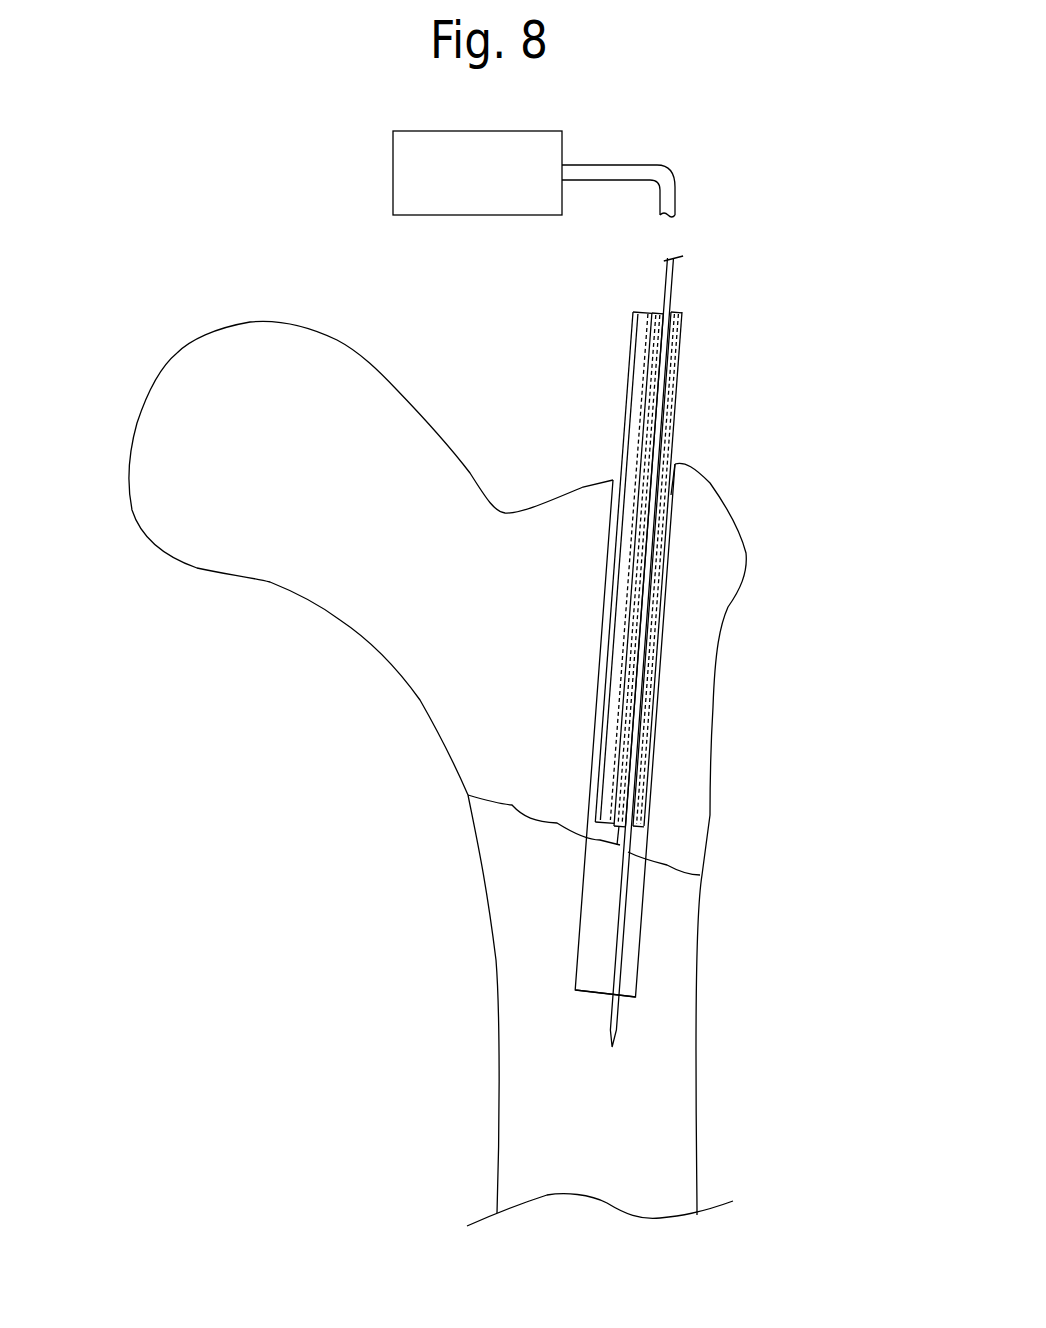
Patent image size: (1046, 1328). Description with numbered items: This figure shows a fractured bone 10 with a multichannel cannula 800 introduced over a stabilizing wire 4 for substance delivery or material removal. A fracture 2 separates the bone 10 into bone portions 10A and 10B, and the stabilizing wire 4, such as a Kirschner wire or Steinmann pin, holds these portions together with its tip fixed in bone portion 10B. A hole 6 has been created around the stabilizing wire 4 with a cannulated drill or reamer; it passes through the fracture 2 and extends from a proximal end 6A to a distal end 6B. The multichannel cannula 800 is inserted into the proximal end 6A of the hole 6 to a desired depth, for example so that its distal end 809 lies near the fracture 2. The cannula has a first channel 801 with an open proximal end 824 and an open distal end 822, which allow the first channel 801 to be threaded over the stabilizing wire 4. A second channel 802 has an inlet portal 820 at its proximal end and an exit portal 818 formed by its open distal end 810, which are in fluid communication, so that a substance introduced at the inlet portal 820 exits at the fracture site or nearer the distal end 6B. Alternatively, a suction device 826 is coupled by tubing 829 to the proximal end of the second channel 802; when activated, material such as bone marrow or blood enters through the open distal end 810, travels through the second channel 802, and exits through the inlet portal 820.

The fracture 2 is at (512, 805).
The stabilizing wire 4 is at (673, 274).
The hole 6 is at (597, 690).
The proximal end of hole 6A is at (675, 463).
The distal end of hole 6B is at (629, 998).
The bone 10 is at (177, 353).
The bone portion 10A is at (358, 632).
The bone portion 10B is at (495, 970).
The multichannel cannula 800 is at (627, 382).
The first channel 801 is at (678, 372).
The second channel 802 is at (637, 437).
The distal end of multichannel cannula 809 is at (594, 821).
The open distal end of second channel 810 is at (618, 828).
The exit portal 818 is at (614, 826).
The inlet portal 820 is at (643, 311).
The open distal end of first channel 822 is at (632, 827).
The open proximal end of first channel 824 is at (674, 311).
The suction device 826 is at (392, 173).
The tubing 829 is at (633, 163).